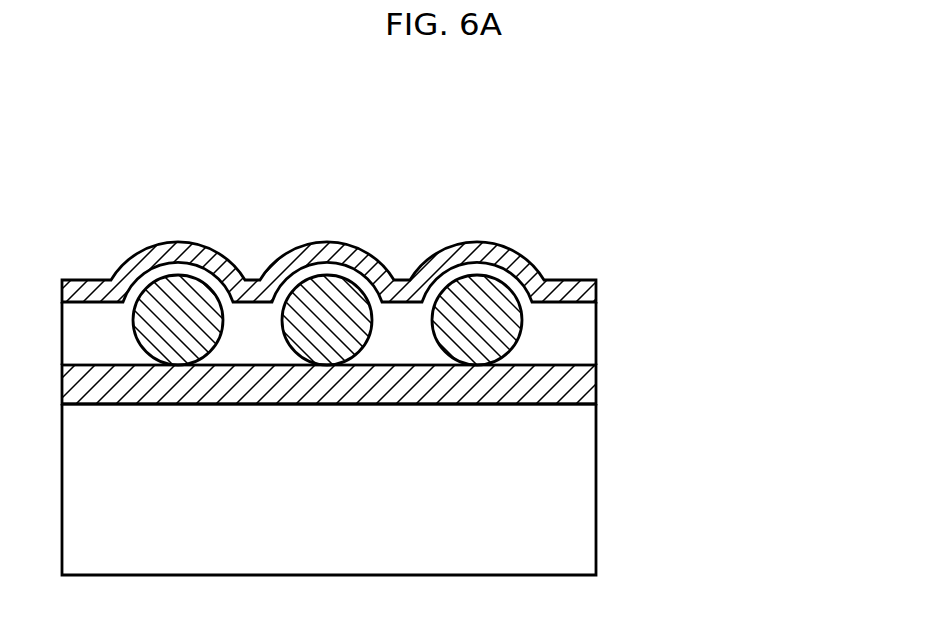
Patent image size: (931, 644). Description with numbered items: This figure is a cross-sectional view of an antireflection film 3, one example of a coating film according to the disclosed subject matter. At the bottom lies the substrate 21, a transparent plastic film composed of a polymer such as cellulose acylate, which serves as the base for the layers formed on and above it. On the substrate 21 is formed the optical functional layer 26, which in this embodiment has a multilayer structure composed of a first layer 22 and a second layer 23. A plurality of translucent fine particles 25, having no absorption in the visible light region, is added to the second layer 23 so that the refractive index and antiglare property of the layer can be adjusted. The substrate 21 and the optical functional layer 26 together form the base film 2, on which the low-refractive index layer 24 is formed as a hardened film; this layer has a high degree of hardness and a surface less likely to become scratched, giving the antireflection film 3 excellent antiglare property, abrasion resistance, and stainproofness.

The base film 2 is at (772, 345).
The antireflection film 3 is at (478, 195).
The substrate 21 is at (587, 494).
The first layer 22 is at (587, 381).
The second layer 23 is at (587, 338).
The low-refractive index layer 24 is at (588, 293).
The translucent fine particles 25 is at (493, 292).
The optical functional layer 26 is at (702, 320).